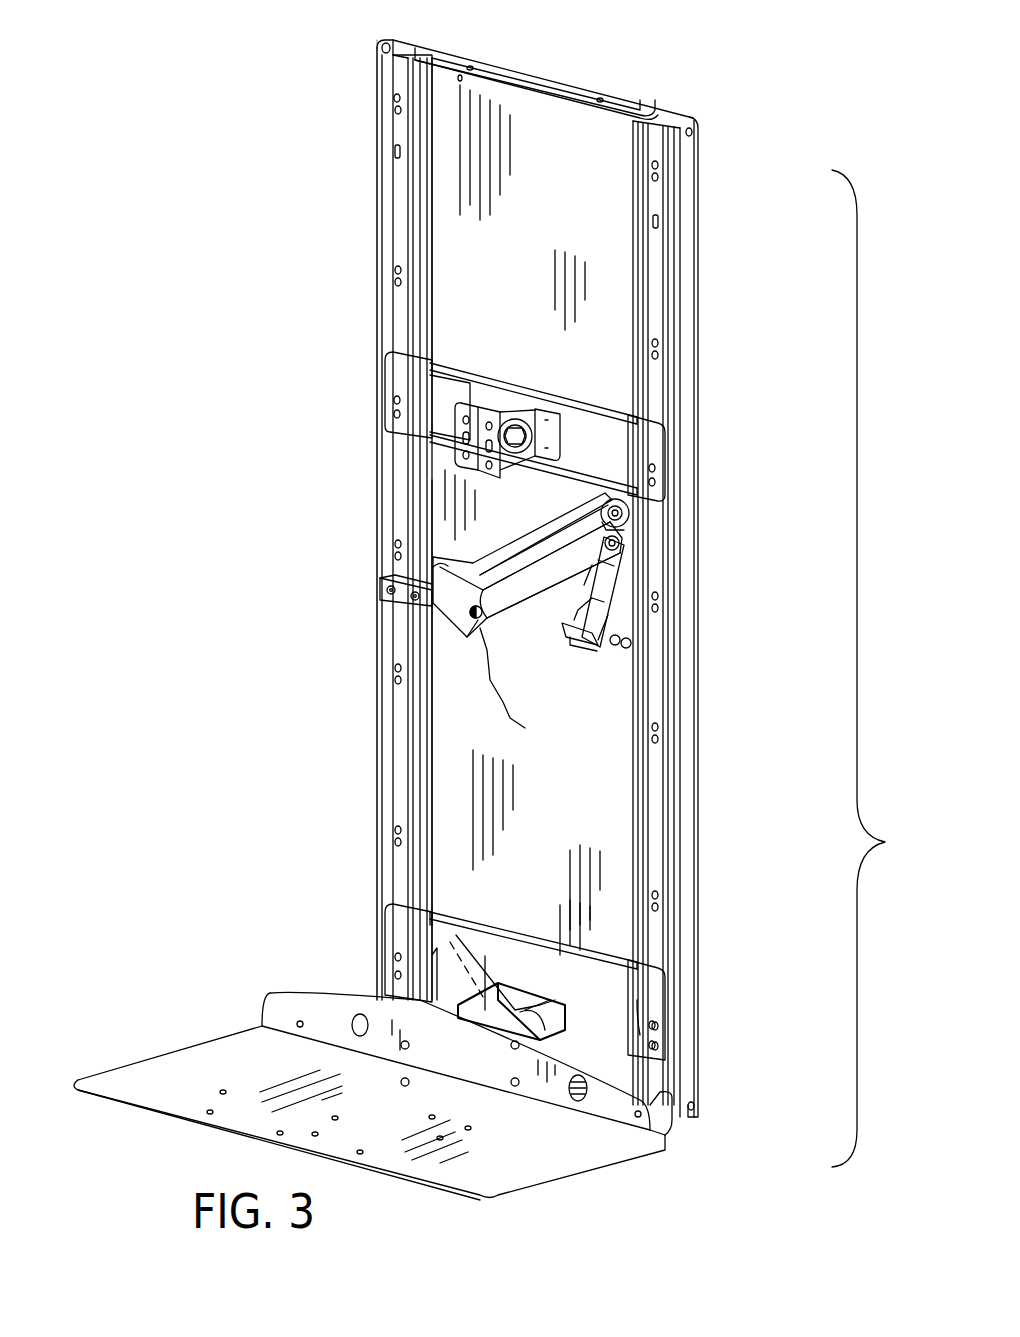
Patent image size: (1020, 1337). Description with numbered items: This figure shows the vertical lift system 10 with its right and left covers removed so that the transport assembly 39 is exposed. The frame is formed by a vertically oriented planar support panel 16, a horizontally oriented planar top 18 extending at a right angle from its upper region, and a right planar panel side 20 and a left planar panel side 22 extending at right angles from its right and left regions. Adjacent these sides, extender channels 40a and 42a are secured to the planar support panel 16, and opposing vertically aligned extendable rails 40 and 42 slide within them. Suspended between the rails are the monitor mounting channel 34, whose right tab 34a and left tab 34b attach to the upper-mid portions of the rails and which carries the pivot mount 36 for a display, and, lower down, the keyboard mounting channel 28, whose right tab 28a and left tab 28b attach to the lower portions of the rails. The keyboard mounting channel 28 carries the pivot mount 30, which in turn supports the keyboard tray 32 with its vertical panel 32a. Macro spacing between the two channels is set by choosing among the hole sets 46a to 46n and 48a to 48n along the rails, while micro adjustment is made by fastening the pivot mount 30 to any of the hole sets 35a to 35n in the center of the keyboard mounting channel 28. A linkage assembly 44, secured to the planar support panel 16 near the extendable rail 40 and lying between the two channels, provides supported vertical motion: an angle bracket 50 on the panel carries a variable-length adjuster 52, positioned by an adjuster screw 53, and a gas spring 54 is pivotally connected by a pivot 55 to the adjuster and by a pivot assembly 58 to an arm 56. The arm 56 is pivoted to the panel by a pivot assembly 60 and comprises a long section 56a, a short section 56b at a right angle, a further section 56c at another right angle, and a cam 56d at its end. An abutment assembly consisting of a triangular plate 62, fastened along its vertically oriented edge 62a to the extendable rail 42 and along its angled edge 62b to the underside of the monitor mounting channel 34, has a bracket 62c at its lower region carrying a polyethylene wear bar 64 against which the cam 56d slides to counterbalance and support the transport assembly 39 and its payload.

The vertical lift system 10 is at (718, 92).
The planar support panel 16 is at (550, 260).
The planar top 18 is at (525, 78).
The right planar panel side 20 is at (690, 183).
The left planar panel side 22 is at (380, 142).
The keyboard mounting channel 28 is at (600, 963).
The right tab 28a is at (645, 978).
The left tab 28b is at (400, 918).
The pivot mount 30 is at (575, 1020).
The keyboard tray 32 is at (160, 1055).
The vertical panel 32a is at (318, 1005).
The monitor mounting channel 34 is at (595, 435).
The right tab 34a is at (655, 455).
The left tab 34b is at (408, 375).
The hole set 35a is at (540, 945).
The hole set 35n is at (462, 880).
The pivot mount 36 is at (455, 432).
The transport assembly 39 is at (878, 668).
The extendable rail 40 is at (653, 248).
The extender channel 40a is at (673, 284).
The extendable rail 42 is at (401, 186).
The extender channel 42a is at (380, 204).
The linkage assembly 44 is at (520, 725).
The hole set 46a is at (663, 178).
The hole set 46n is at (700, 1054).
The hole set 48a is at (395, 100).
The hole set 48n is at (395, 958).
The angle bracket 50 is at (612, 607).
The adjuster 52 is at (626, 565).
The adjuster screw 53 is at (578, 612).
The gas spring 54 is at (522, 600).
The pivot 55 is at (622, 543).
The arm 56 is at (537, 522).
The arm section 56a is at (532, 548).
The short section 56b is at (470, 592).
The section 56c is at (472, 620).
The cam 56d is at (445, 616).
The pivot assembly 58 is at (476, 620).
The pivot assembly 60 is at (629, 511).
The triangular plate 62 is at (398, 467).
The vertically oriented edge 62a is at (405, 458).
The angled edge 62b is at (560, 462).
The bracket 62c is at (390, 598).
The wear bar 64 is at (433, 560).